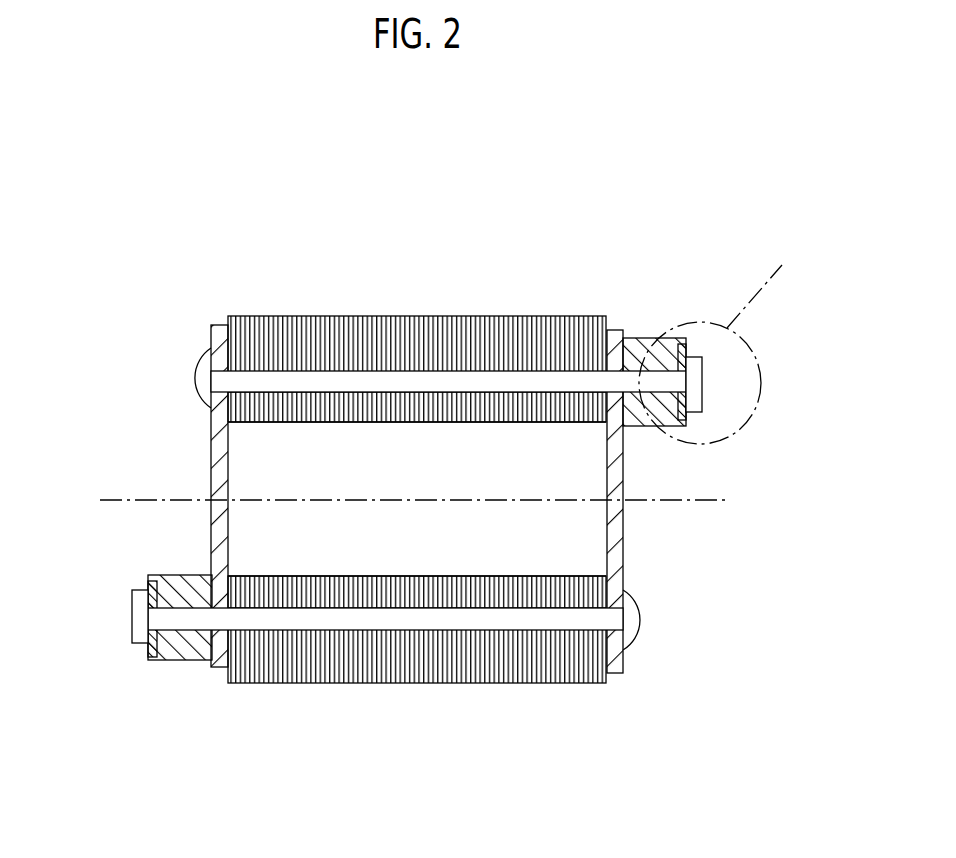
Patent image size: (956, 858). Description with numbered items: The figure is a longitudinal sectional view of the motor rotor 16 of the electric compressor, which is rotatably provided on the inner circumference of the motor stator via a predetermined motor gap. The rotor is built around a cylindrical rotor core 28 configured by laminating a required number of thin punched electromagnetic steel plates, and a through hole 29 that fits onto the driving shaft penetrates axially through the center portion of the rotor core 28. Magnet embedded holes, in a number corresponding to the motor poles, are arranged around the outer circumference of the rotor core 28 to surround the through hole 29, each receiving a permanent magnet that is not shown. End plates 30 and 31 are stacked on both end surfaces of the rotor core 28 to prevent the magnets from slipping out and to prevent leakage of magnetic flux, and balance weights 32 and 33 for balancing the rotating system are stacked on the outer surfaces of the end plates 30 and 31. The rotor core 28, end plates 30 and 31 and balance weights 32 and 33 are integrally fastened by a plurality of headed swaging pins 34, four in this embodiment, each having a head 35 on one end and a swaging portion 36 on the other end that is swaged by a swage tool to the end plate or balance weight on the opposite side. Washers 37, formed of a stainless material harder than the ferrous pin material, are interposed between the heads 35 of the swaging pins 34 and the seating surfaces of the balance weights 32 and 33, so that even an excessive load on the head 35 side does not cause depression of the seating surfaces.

The motor rotor 16 is at (365, 246).
The rotor core 28 is at (453, 317).
The through hole 29 is at (290, 576).
The end plate 30 is at (218, 447).
The end plate 31 is at (620, 540).
The balance weight 32 is at (180, 660).
The balance weight 33 is at (638, 338).
The headed swaging pin 34 is at (428, 385).
The head 35 is at (697, 384).
The swaging portion 36 is at (205, 380).
The washer 37 is at (678, 425).